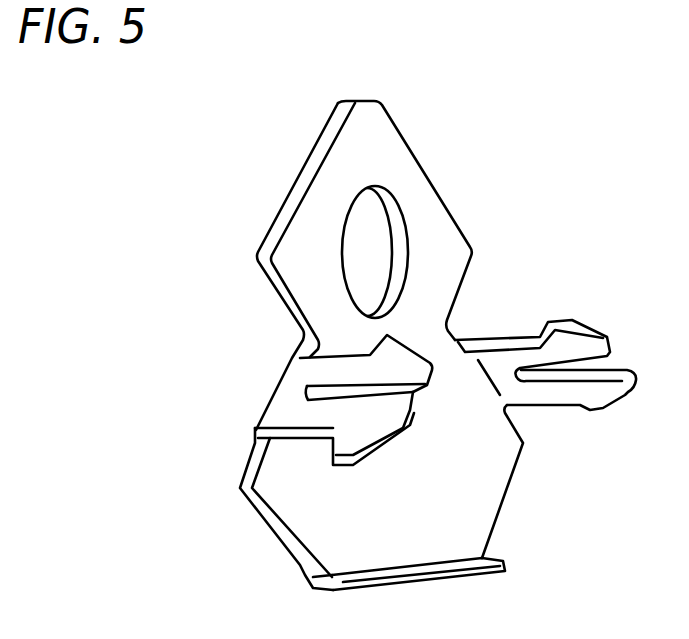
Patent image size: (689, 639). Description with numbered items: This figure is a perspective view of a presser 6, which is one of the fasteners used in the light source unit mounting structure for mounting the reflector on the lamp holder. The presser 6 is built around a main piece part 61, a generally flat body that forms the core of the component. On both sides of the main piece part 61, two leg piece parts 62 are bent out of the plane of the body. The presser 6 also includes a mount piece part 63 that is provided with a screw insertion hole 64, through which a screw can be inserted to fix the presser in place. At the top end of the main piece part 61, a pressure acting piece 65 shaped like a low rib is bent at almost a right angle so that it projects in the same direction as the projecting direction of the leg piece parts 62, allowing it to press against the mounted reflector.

The presser 6 is at (457, 182).
The main piece part 61 is at (490, 483).
The leg piece parts 62 is at (512, 340).
The mount piece part 63 is at (325, 172).
The screw insertion hole 64 is at (338, 240).
The pressure acting piece 65 is at (468, 580).